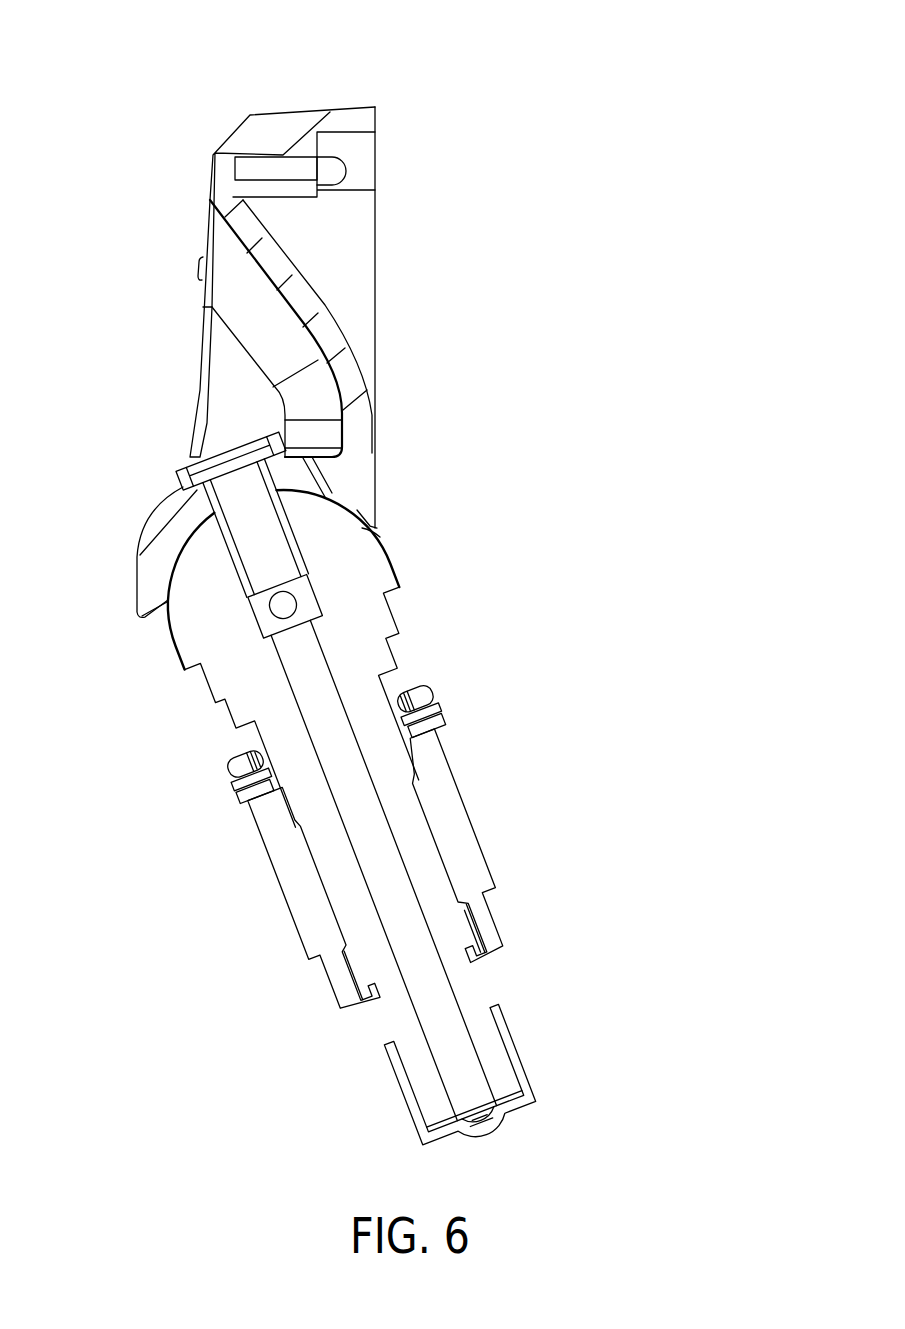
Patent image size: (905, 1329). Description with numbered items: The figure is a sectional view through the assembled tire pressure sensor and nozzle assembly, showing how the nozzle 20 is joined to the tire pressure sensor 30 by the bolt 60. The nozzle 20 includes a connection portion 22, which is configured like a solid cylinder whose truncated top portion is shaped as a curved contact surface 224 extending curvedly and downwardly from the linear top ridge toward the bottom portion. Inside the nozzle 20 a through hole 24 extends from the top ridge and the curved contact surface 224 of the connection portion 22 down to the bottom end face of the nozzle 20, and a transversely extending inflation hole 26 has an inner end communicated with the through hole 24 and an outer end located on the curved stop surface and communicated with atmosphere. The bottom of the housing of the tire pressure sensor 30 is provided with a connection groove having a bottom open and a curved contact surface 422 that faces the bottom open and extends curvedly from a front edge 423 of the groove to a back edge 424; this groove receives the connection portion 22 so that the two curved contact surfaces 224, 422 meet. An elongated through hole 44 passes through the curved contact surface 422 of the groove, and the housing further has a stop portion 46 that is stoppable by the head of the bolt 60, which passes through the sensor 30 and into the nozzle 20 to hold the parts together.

The nozzle 20 is at (484, 770).
The connection portion 22 is at (365, 572).
The curved contact surface 224 is at (375, 533).
The through hole 24 is at (300, 673).
The inflation hole 26 is at (263, 623).
The tire pressure sensor 30 is at (305, 110).
The elongated through hole 44 is at (302, 482).
The back edge 424 is at (365, 523).
The curved contact surface 422 is at (182, 550).
The front edge 423 is at (167, 612).
The stop portion 46 is at (170, 513).
The bolt 60 is at (180, 470).